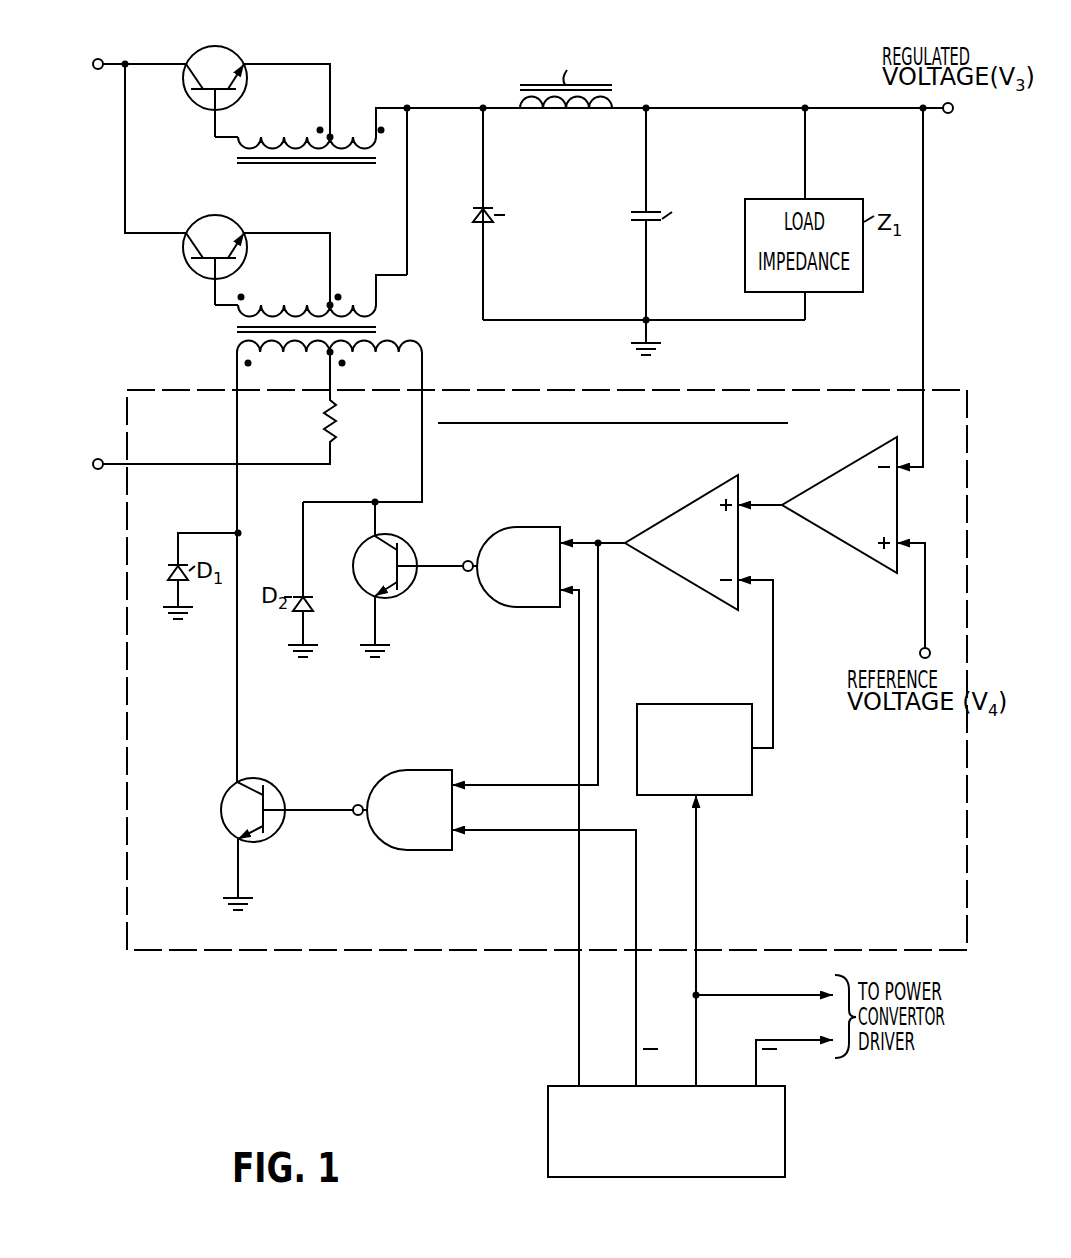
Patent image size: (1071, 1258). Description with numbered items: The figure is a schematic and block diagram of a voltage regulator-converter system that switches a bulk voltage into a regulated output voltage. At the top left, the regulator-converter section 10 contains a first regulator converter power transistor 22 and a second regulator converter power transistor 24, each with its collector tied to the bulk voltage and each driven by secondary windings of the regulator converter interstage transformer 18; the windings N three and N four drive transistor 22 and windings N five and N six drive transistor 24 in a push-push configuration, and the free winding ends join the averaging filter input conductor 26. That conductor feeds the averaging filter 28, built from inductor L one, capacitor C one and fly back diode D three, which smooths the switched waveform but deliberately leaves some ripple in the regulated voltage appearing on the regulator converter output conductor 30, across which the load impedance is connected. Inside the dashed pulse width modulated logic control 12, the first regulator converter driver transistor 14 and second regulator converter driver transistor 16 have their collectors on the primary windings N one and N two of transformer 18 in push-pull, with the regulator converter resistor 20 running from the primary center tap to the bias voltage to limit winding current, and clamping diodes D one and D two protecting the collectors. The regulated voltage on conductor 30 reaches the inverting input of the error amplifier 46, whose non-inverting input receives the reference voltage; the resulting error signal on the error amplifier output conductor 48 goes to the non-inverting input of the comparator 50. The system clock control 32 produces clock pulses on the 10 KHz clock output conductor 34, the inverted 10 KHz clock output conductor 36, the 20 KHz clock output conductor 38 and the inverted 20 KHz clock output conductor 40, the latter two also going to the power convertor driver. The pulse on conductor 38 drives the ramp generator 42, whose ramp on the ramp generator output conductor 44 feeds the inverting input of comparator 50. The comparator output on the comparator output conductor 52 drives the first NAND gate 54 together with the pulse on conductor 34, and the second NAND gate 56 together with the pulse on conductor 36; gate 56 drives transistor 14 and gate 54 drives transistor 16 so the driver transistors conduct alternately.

The regulator-converter section 10 is at (322, 28).
The pulse width modulated logic control 12 is at (350, 955).
The first regulator converter driver transistor 14 is at (270, 785).
The second regulator converter driver transistor 16 is at (397, 598).
The regulator converter interstage transformer 18 is at (352, 165).
The regulator converter resistor 20 is at (334, 418).
The first regulator converter power transistor 22 is at (248, 80).
The second regulator converter power transistor 24 is at (238, 222).
The averaging filter input conductor 26 is at (458, 110).
The averaging filter 28 is at (687, 37).
The regulator converter output conductor 30 is at (926, 230).
The system clock control 32 is at (548, 1110).
The 10 KHz clock output conductor 34 is at (578, 980).
The inverted 10 KHz clock output conductor 36 is at (636, 982).
The 20 KHz clock output conductor 38 is at (739, 1000).
The inverted 20 KHz clock output conductor 40 is at (785, 1043).
The ramp generator 42 is at (700, 704).
The ramp generator output conductor 44 is at (774, 722).
The error amplifier 46 is at (846, 466).
The error amplifier output conductor 48 is at (765, 503).
The comparator 50 is at (690, 502).
The comparator output conductor 52 is at (613, 548).
The first NAND gate 54 is at (515, 527).
The second NAND gate 56 is at (412, 770).